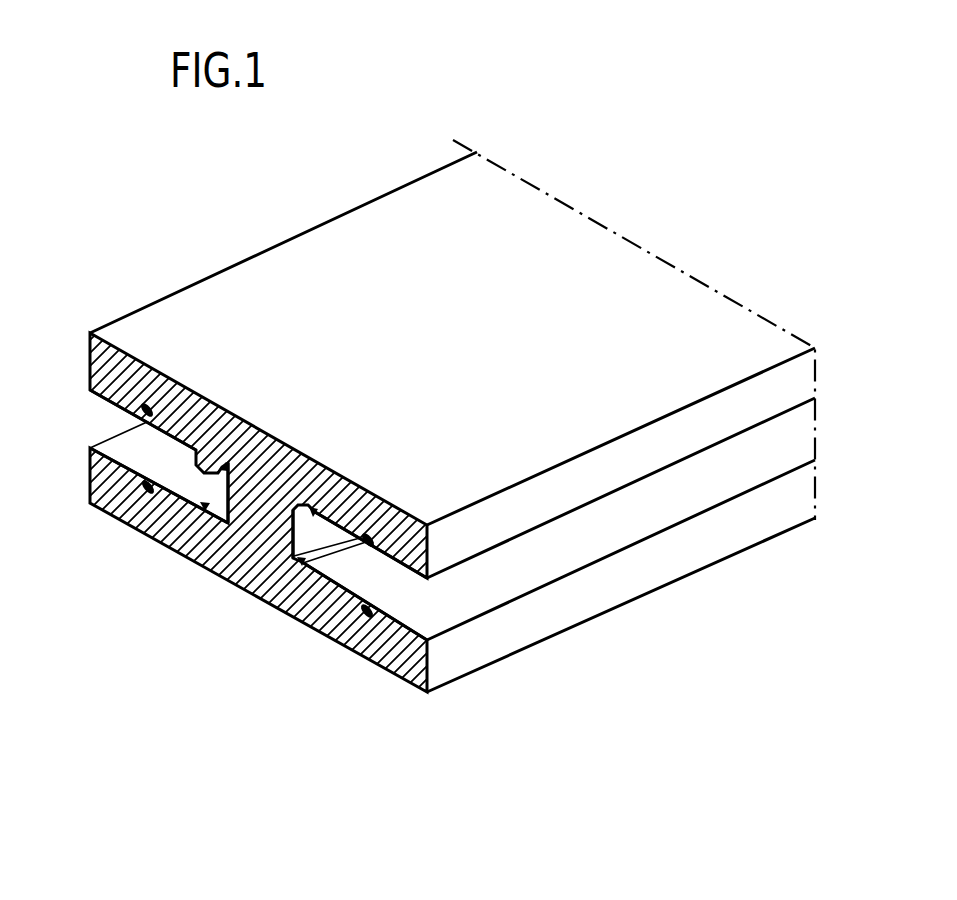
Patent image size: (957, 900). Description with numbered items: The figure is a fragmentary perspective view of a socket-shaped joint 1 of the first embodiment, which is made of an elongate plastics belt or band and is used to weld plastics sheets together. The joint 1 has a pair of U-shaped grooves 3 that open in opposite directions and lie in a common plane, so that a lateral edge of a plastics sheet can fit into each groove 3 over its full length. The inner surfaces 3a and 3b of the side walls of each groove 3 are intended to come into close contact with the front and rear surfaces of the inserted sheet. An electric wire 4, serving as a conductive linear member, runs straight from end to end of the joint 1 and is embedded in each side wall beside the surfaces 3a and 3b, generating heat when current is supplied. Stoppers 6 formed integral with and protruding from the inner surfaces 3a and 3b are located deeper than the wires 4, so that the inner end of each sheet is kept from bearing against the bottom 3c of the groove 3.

The joint 1 is at (661, 245).
The groove 3 is at (126, 430).
The inner surface of groove side wall 3a is at (392, 566).
The inner surface of groove side wall 3b is at (475, 697).
The bottom of groove 3c is at (199, 462).
The electric wire 4 is at (145, 405).
The stopper 6 is at (225, 463).